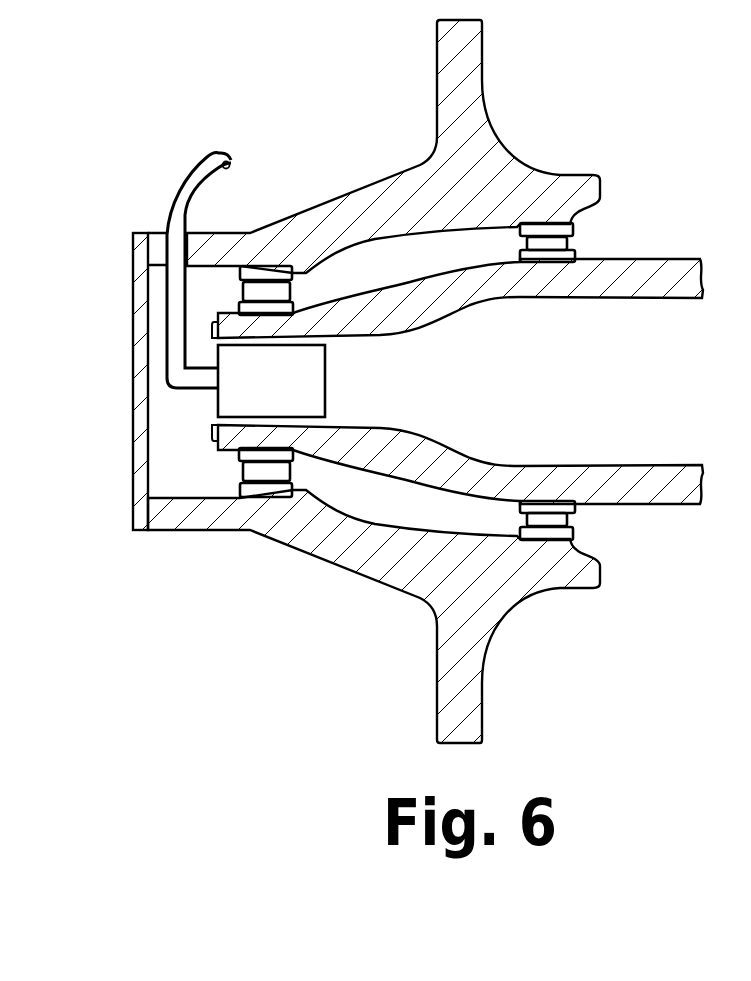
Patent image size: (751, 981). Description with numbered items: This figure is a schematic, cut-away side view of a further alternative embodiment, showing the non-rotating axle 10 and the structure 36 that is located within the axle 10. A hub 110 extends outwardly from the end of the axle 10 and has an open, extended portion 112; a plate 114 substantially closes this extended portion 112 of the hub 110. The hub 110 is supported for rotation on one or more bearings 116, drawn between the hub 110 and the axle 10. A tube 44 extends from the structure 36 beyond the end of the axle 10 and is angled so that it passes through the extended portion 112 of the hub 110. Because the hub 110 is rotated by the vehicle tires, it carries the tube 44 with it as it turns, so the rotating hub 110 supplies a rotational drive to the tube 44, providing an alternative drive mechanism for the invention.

The axle 10 is at (687, 249).
The structure 36 is at (352, 378).
The tube 44 is at (167, 308).
The hub 110 is at (342, 200).
The extended portion 112 is at (190, 533).
The plate 114 is at (122, 375).
The bearings 116 is at (300, 284).